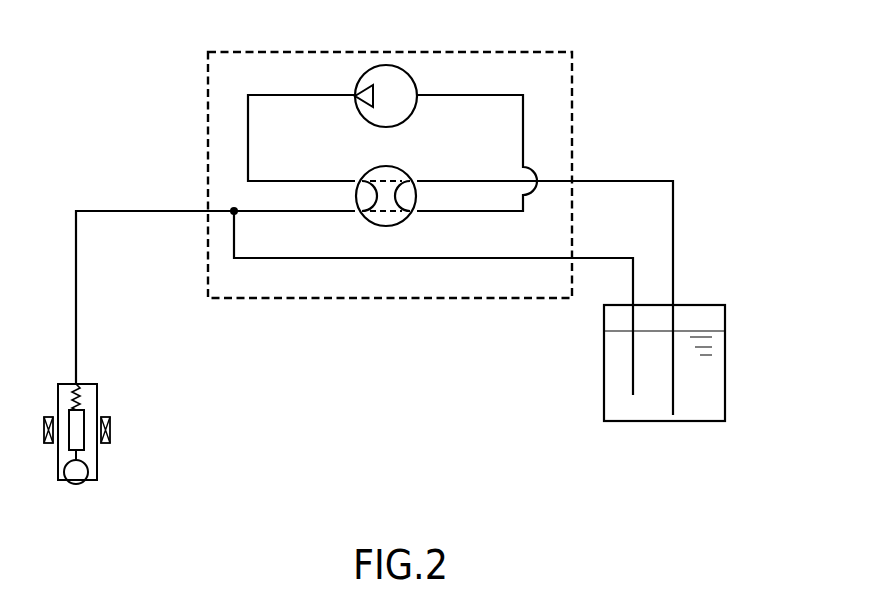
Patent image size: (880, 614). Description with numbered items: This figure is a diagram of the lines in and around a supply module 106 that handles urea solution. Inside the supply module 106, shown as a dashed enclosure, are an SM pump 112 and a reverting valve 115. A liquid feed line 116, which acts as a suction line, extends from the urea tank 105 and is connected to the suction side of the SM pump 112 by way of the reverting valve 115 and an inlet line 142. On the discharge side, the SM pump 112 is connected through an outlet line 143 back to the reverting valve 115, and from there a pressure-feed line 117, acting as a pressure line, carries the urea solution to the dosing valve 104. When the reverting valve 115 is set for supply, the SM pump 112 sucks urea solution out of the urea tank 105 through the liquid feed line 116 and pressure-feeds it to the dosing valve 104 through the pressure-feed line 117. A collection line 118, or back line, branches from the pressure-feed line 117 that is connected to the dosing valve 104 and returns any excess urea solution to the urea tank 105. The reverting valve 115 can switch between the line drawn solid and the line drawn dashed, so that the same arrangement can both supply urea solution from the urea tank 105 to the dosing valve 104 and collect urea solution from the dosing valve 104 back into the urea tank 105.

The dosing valve 104 is at (104, 398).
The urea tank 105 is at (708, 301).
The supply module 106 is at (508, 51).
The SM pump 112 is at (386, 70).
The reverting valve 115 is at (386, 170).
The liquid feed line 116 is at (664, 179).
The pressure-feed line 117 is at (93, 208).
The collection line 118 is at (588, 258).
The inlet line 142 is at (524, 113).
The outlet line 143 is at (248, 124).